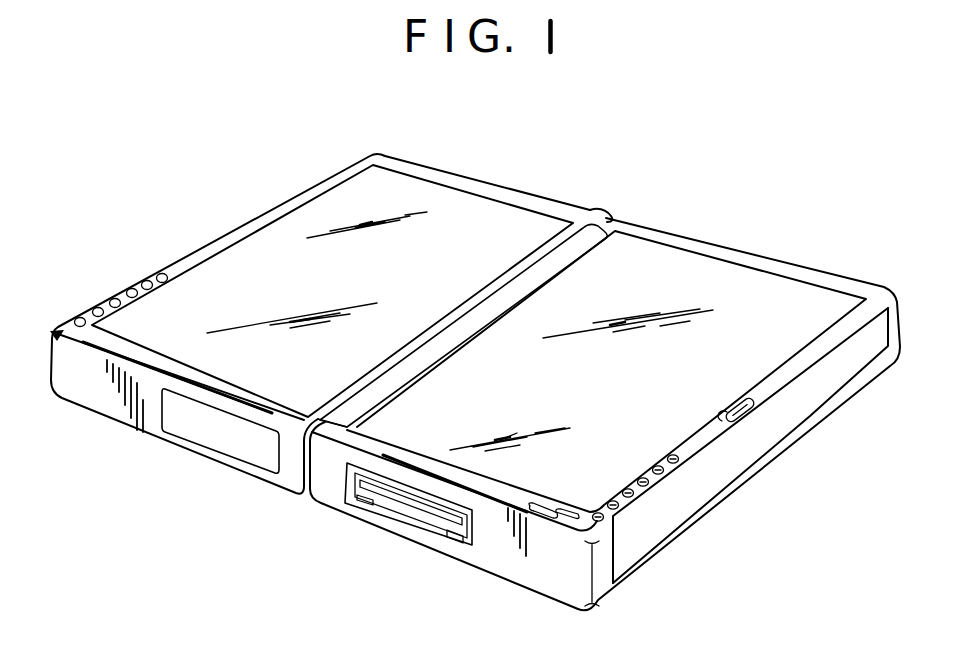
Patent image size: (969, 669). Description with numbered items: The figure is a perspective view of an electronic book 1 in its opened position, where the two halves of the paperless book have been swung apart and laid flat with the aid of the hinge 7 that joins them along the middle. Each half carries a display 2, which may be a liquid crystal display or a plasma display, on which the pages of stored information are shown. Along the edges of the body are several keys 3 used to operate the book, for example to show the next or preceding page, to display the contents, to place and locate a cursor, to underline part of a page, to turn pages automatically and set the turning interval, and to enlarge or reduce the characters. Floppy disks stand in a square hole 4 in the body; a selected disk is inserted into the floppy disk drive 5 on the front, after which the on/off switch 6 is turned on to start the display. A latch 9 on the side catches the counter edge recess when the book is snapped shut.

The electronic book 1 is at (184, 210).
The display 2 is at (187, 300).
The keys 3 is at (623, 487).
The square hole 4 is at (245, 447).
The floppy disk drive 5 is at (410, 500).
The on/off switch 6 is at (558, 518).
The hinge 7 is at (590, 238).
The latch 9 is at (747, 410).